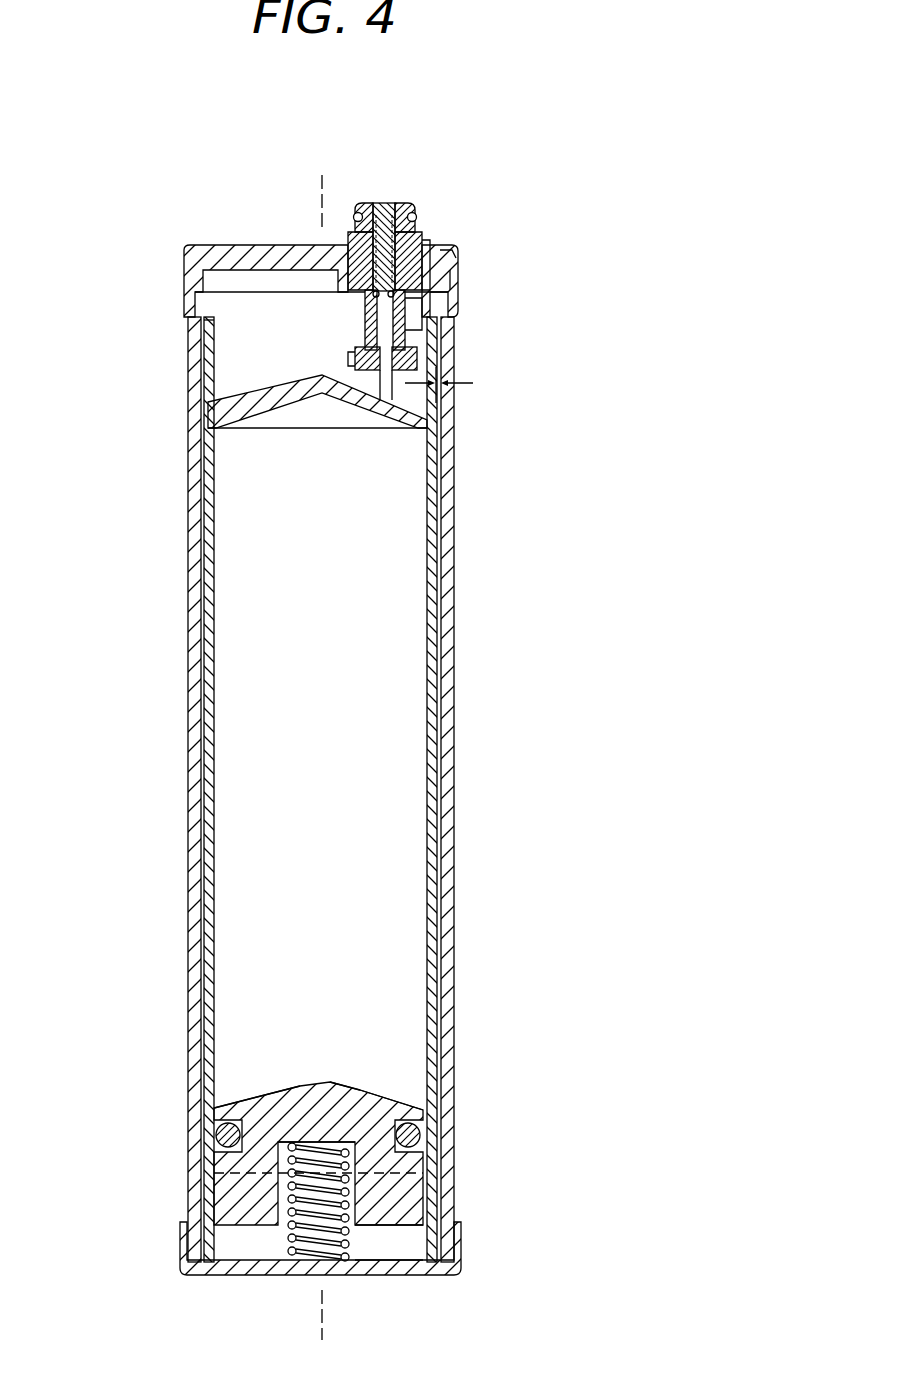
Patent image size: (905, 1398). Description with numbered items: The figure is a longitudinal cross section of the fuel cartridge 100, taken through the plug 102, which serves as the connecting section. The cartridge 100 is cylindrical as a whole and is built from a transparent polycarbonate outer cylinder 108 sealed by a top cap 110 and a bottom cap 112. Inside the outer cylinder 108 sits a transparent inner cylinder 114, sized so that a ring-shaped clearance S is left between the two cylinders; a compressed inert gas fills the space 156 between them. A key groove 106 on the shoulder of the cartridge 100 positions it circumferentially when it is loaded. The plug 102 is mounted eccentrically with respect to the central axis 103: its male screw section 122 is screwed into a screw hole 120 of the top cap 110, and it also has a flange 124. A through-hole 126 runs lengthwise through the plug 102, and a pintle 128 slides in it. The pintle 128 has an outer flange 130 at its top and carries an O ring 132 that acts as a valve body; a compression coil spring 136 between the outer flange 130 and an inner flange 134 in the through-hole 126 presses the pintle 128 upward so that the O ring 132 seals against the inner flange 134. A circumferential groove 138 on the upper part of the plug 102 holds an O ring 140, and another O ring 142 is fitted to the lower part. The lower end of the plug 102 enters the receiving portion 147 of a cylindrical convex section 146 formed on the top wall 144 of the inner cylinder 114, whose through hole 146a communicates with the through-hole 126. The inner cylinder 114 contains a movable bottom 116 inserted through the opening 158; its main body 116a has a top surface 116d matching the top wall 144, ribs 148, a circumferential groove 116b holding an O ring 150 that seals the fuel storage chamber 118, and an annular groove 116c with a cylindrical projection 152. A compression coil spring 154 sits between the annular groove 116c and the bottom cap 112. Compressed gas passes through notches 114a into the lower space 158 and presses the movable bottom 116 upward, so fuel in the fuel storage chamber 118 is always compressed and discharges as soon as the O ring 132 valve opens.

The cartridge 100 is at (88, 280).
The plug 102 is at (422, 289).
The central axis 103 is at (322, 210).
The key groove 106 is at (460, 254).
The outer cylinder 108 is at (451, 585).
The top cap 110 is at (187, 243).
The bottom cap 112 is at (450, 1268).
The inner cylinder 114 is at (430, 685).
The notches 114a is at (425, 1172).
The movable bottom 116 is at (316, 1117).
The main body 116a is at (396, 1105).
The circumferential groove 116b is at (222, 1122).
The annular groove 116c is at (352, 1118).
The top surface 116d is at (261, 1096).
The fuel storage chamber 118 is at (347, 621).
The screw hole 120 is at (455, 278).
The male screw section 122 is at (425, 258).
The flange 124 is at (421, 248).
The through-hole 126 is at (392, 322).
The pintle 128 is at (392, 205).
The outer flange 130 is at (414, 218).
The O ring 132 is at (442, 300).
The inner flange 134 is at (363, 288).
The compression coil spring 136 is at (356, 212).
The circumferential groove 138 is at (372, 240).
The O ring 140 is at (418, 237).
The O ring 142 is at (416, 357).
The top wall 144 is at (212, 396).
The cylindrical convex section 146 is at (440, 396).
The through hole 146a is at (387, 400).
The receiving portion 147 is at (357, 362).
The ribs 148 is at (420, 1194).
The O ring 150 is at (421, 1135).
The cylindrical projection 152 is at (288, 1170).
The compression coil spring 154 is at (285, 1237).
The space 156 is at (215, 328).
The opening 158 is at (391, 1248).
The clearance S is at (450, 382).